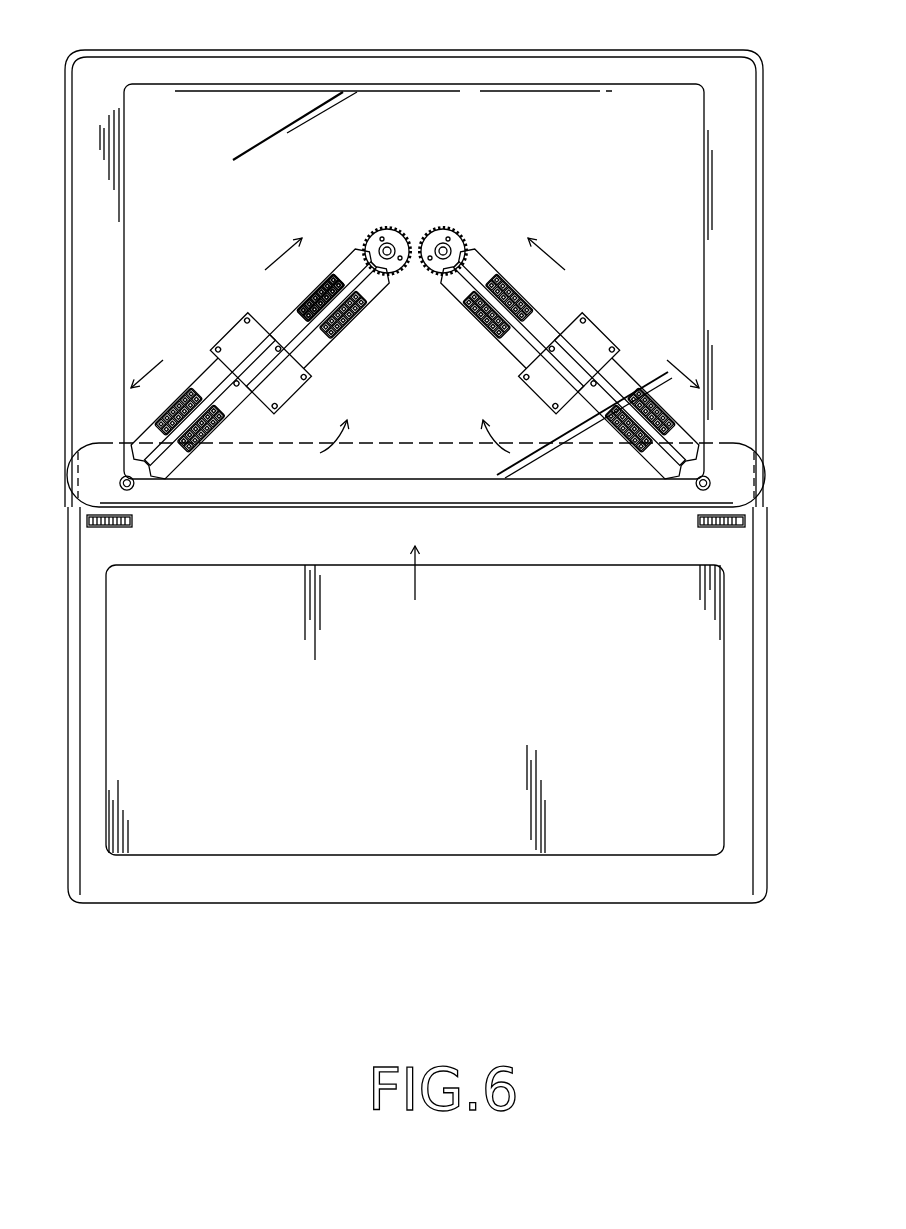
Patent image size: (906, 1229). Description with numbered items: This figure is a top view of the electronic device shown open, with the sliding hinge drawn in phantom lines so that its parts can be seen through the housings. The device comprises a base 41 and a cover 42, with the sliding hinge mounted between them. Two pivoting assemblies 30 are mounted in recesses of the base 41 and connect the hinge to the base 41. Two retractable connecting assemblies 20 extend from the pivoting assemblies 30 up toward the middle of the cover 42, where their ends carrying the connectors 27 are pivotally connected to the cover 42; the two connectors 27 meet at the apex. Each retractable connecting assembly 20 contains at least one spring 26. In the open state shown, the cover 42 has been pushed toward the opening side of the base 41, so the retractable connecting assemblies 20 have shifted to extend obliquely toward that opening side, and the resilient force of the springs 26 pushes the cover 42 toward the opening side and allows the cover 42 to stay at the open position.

The retractable connecting assembly 20 is at (229, 300).
The spring 26 is at (343, 333).
The connector 27 is at (393, 232).
The pivoting assembly 30 is at (103, 537).
The base 41 is at (403, 889).
The cover 42 is at (541, 100).